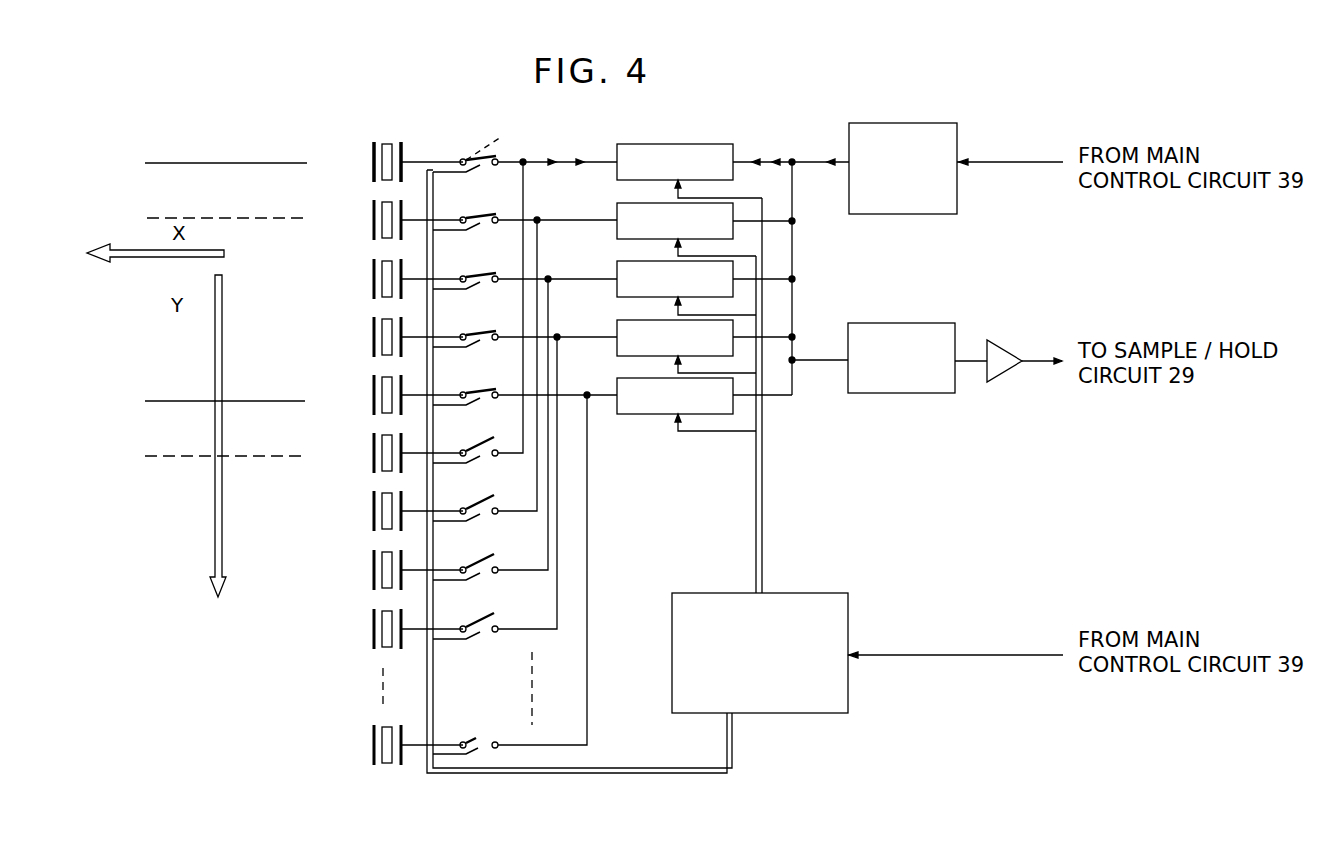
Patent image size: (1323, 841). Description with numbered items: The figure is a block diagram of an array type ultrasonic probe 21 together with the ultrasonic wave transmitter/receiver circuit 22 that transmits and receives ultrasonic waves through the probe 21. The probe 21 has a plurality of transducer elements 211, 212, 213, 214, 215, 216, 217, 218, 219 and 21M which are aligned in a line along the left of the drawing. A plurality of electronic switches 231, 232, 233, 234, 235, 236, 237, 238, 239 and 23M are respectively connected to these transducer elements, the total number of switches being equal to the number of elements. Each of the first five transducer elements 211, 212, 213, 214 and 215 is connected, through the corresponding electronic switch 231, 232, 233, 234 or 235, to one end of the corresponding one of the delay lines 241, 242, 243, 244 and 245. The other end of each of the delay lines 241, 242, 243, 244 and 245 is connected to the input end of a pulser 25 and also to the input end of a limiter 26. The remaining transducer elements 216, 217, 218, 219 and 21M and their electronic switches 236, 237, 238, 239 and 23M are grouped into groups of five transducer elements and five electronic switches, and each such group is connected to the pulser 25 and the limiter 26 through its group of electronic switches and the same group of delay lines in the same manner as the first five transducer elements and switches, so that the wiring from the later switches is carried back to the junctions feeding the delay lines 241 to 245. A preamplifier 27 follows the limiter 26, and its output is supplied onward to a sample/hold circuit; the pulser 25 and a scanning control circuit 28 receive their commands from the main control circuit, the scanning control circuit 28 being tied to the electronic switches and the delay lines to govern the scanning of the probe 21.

The array type ultrasonic probe 21 is at (396, 106).
The transducer element 211 is at (372, 158).
The transducer element 212 is at (372, 216).
The transducer element 213 is at (372, 275).
The transducer element 214 is at (372, 333).
The transducer element 215 is at (372, 391).
The transducer element 216 is at (372, 449).
The transducer element 217 is at (372, 507).
The transducer element 218 is at (372, 566).
The transducer element 219 is at (372, 625).
The transducer element 21M is at (372, 741).
The ultrasonic wave transmitter/receiver circuit 22 is at (796, 106).
The electronic switch 231 is at (484, 164).
The electronic switch 232 is at (484, 222).
The electronic switch 233 is at (484, 281).
The electronic switch 234 is at (484, 339).
The electronic switch 235 is at (484, 397).
The electronic switch 236 is at (484, 455).
The electronic switch 237 is at (484, 513).
The electronic switch 238 is at (484, 572).
The electronic switch 239 is at (484, 631).
The electronic switch 23M is at (475, 742).
The delay line 241 is at (617, 150).
The delay line 242 is at (617, 209).
The delay line 243 is at (617, 267).
The delay line 244 is at (617, 326).
The delay line 245 is at (617, 385).
The pulser 25 is at (904, 123).
The limiter 26 is at (903, 323).
The preamplifier 27 is at (1008, 344).
The scanning control circuit 28 is at (812, 593).